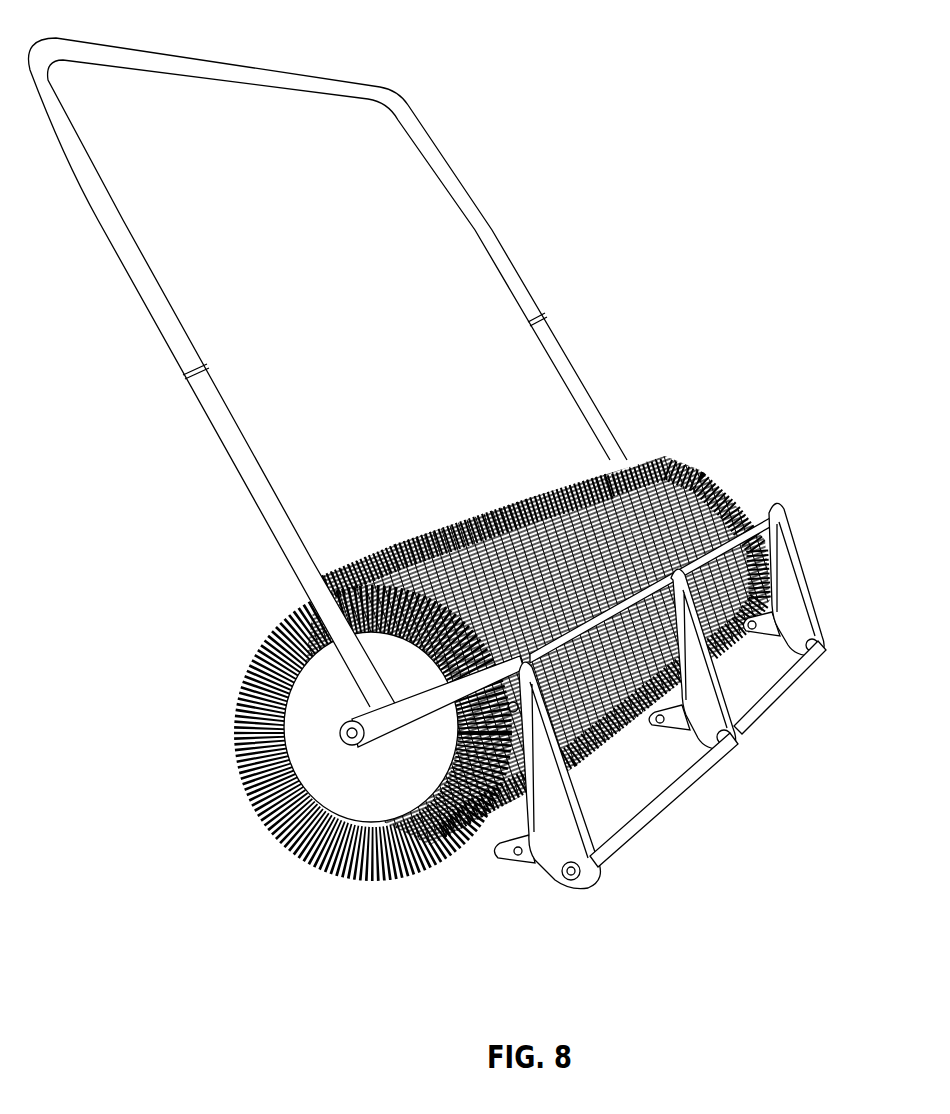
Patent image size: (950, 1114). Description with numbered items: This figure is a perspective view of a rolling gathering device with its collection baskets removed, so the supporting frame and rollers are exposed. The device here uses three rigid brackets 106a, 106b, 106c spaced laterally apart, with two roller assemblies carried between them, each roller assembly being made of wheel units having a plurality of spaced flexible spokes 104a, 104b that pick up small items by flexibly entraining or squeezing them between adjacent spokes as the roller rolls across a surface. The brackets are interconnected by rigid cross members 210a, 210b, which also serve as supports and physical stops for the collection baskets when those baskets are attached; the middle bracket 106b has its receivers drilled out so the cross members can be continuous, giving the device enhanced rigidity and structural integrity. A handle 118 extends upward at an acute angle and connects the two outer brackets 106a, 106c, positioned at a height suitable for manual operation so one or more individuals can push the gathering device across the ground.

The handle 118 is at (322, 87).
The spoke 104a is at (366, 524).
The spoke 104b is at (537, 474).
The bracket 106a is at (568, 834).
The bracket 106b is at (707, 697).
The bracket 106c is at (790, 568).
The cross member 210a is at (657, 802).
The cross member 210b is at (787, 680).